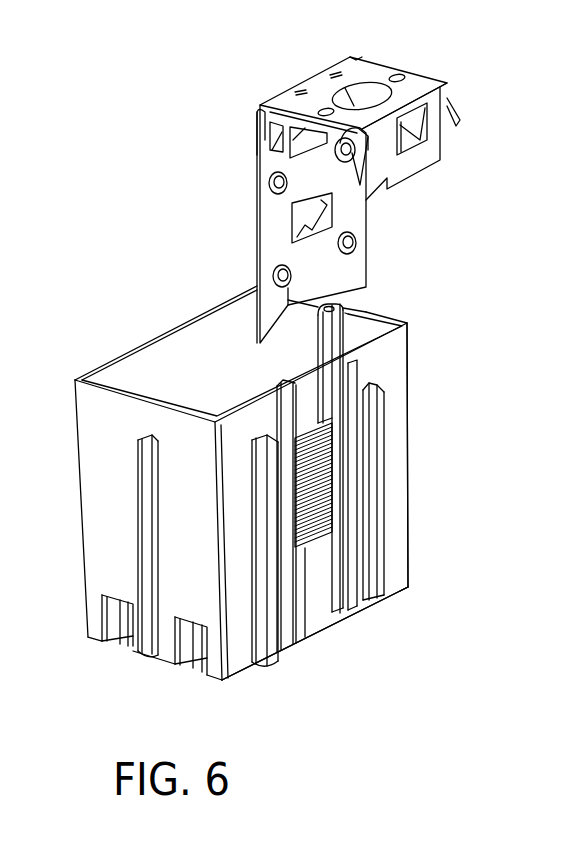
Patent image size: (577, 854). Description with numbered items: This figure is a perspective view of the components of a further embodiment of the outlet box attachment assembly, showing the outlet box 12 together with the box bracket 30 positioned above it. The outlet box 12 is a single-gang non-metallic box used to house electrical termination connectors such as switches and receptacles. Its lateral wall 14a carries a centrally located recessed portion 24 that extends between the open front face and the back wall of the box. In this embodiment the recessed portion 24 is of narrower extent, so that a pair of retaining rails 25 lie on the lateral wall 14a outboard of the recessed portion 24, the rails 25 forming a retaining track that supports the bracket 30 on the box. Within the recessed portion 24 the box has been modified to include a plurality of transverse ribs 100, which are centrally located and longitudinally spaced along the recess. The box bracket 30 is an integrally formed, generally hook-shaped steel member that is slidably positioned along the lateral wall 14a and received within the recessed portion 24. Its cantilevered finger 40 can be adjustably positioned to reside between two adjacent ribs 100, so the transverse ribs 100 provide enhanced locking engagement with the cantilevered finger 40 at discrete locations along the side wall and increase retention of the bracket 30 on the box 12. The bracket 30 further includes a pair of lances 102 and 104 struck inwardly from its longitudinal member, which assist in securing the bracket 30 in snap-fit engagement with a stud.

The outlet box 12 is at (307, 511).
The lateral wall 14a is at (400, 345).
The recessed portion 24 is at (308, 623).
The retaining rails 25 is at (375, 418).
The transverse ribs 100 is at (315, 487).
The box bracket 30 is at (366, 195).
The cantilevered finger 40 is at (263, 115).
The lance 102 is at (273, 142).
The lance 104 is at (355, 88).